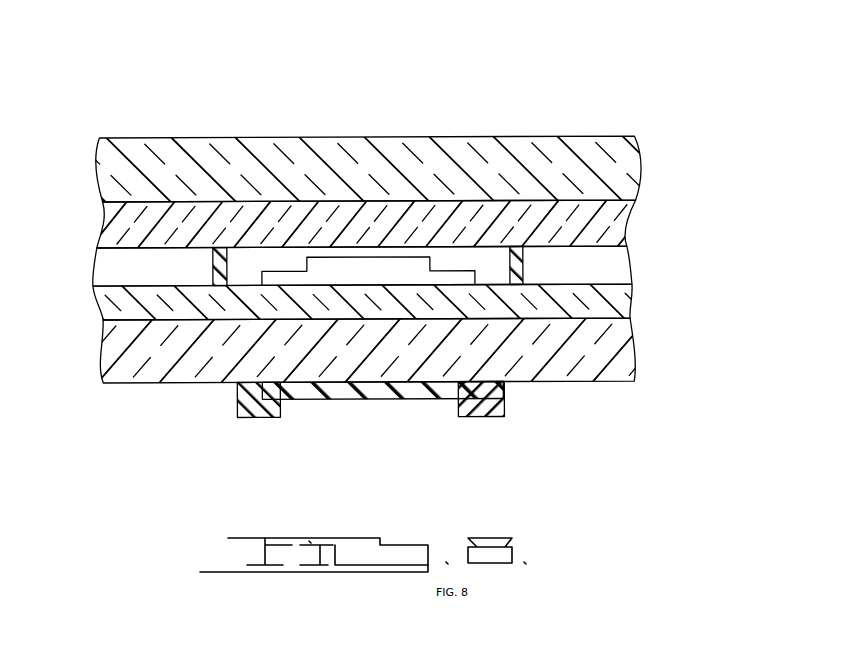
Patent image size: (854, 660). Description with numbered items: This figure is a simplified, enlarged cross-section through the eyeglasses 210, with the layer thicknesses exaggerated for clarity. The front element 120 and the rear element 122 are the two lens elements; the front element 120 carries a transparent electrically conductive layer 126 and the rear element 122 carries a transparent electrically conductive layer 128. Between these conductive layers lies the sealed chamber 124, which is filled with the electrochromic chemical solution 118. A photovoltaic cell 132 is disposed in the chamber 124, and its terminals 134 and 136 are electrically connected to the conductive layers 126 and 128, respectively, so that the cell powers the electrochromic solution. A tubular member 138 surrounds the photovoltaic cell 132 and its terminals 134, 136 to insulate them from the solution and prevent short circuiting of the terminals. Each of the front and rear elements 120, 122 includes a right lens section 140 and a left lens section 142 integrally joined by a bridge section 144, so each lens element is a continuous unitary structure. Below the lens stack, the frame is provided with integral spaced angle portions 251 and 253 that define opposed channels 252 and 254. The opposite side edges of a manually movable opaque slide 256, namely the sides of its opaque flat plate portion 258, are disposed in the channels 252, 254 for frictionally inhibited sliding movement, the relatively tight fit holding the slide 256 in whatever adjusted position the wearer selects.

The eyeglasses 210 is at (124, 130).
The rear element 122 is at (566, 138).
The transparent electrically conductive layer 128 is at (623, 218).
The chemical solution 118 is at (603, 255).
The sealed chamber 124 is at (612, 277).
The front element 120 is at (612, 370).
The photovoltaic cell 132 is at (360, 263).
The terminal 134 is at (253, 252).
The terminal 136 is at (450, 272).
The bridge section 144 is at (298, 113).
The tubular member 138 is at (205, 267).
The transparent electrically conductive layer 126 is at (103, 303).
The right lens section 140 is at (145, 375).
The left lens section 142 is at (612, 312).
The angle portion 251 is at (245, 418).
The channel 252 is at (290, 400).
The angle portion 253 is at (500, 415).
The channel 254 is at (450, 400).
The opaque slide 256 is at (393, 400).
The flat plate portion 258 is at (318, 400).